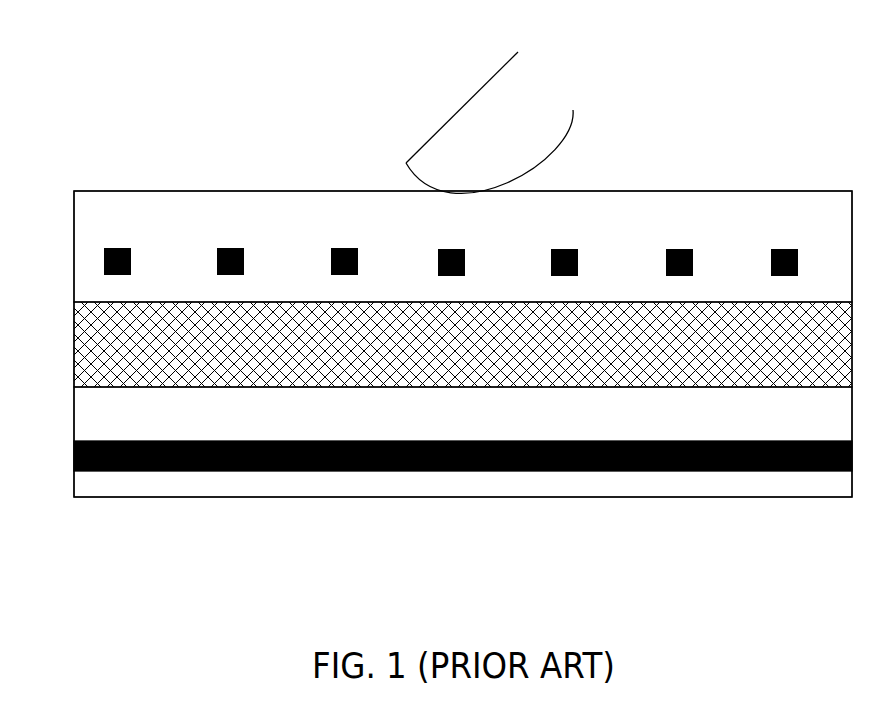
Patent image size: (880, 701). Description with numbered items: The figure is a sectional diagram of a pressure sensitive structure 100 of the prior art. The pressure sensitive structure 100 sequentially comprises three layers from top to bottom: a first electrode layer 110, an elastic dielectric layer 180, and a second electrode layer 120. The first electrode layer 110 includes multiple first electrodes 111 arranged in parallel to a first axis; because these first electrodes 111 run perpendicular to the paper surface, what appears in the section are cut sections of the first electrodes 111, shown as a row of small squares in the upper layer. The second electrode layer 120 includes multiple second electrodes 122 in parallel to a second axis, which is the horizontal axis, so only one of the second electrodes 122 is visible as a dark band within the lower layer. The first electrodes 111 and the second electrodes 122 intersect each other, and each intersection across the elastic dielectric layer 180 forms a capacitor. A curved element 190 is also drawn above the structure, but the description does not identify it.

The pressure sensitive structure 100 is at (816, 35).
The first electrode layer 110 is at (200, 191).
The first electrodes 111 is at (103, 260).
The second electrode layer 120 is at (297, 497).
The second electrodes 122 is at (184, 470).
The elastic dielectric layer 180 is at (490, 387).
The lens / light path 190 is at (407, 163).